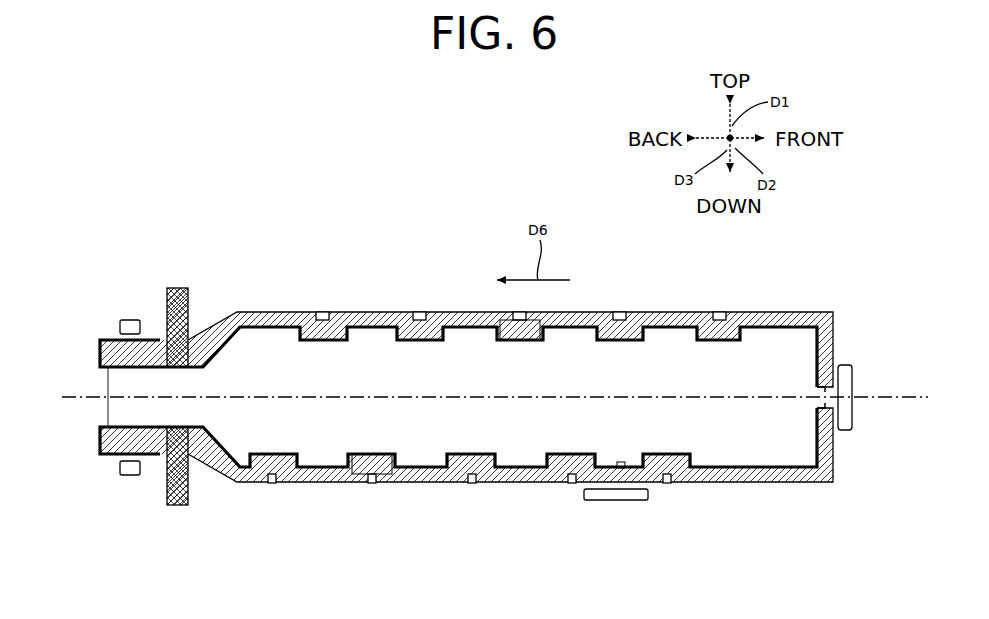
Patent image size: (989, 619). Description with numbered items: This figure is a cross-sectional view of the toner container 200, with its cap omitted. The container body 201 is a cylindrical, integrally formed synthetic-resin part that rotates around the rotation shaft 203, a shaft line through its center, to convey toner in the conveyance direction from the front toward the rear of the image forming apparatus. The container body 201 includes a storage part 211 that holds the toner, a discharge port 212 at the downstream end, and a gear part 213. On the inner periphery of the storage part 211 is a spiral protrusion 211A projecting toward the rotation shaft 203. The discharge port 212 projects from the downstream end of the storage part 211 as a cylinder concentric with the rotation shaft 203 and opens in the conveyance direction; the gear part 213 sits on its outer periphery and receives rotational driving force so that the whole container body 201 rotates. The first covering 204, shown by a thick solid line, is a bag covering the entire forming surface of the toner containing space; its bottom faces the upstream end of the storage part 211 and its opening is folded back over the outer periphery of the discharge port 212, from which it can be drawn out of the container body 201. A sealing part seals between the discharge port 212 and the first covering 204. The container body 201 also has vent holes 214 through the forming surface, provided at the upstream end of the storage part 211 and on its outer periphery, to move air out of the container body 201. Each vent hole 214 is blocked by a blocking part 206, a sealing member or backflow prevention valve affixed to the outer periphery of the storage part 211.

The toner container 200 is at (222, 157).
The container body 201 is at (345, 253).
The rotation shaft 203 is at (897, 395).
The first covering 204 is at (476, 344).
The blocking part 206 is at (613, 503).
The storage part 211 is at (409, 503).
The protrusion 211A is at (373, 463).
The discharge port 212 is at (141, 498).
The gear part 213 is at (176, 280).
The vent hole 214 is at (812, 388).